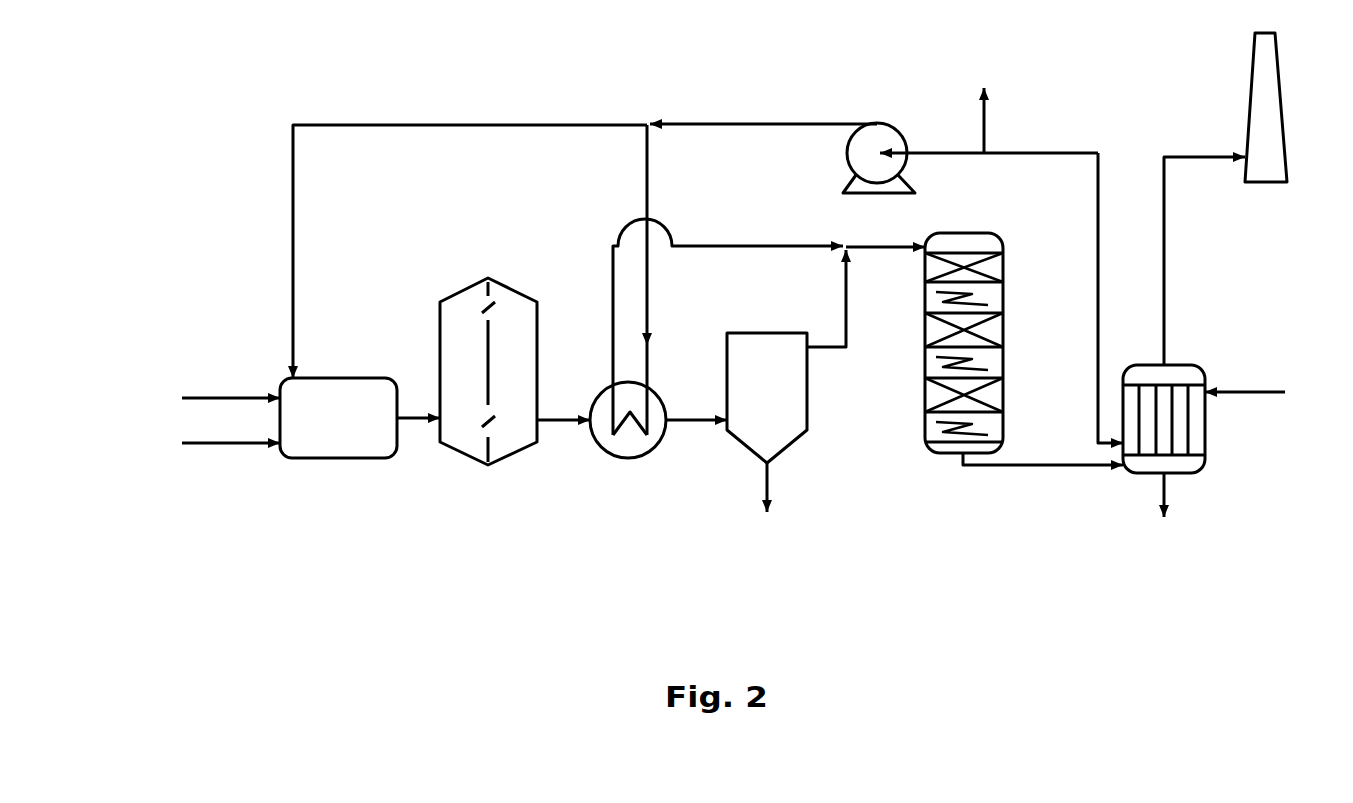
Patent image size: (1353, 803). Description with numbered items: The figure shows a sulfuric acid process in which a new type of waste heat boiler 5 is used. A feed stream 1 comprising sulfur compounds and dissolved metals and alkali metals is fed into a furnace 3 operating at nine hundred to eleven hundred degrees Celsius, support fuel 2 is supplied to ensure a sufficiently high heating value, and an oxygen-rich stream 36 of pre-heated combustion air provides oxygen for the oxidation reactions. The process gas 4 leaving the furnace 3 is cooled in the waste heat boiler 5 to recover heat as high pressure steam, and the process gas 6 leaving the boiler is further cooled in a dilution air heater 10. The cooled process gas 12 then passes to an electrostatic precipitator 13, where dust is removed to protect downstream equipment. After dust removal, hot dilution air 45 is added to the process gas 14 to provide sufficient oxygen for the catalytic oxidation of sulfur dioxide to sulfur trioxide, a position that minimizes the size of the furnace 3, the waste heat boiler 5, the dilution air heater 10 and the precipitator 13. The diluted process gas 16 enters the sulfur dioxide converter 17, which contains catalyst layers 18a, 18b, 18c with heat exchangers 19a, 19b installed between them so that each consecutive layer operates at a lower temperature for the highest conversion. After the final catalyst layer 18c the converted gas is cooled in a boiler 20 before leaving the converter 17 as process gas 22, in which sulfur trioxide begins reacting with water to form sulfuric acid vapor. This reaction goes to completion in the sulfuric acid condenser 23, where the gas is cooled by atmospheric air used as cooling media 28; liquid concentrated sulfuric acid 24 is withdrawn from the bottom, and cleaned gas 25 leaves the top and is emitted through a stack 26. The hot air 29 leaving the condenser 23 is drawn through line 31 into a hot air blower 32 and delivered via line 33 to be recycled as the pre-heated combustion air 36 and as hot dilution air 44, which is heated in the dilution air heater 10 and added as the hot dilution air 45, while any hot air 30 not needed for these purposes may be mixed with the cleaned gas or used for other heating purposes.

The feed stream 1 is at (231, 464).
The support fuel 2 is at (231, 381).
The furnace 3 is at (338, 418).
The process gas 4 is at (418, 446).
The waste heat boiler 5 is at (488, 390).
The process gas 6 is at (563, 448).
The dilution air heater 10 is at (628, 443).
The cooled effluent stream 12 is at (697, 446).
The electrostatic precipitator 13 is at (767, 422).
The process gas 14 is at (816, 298).
The diluted process gas 16 is at (885, 225).
The SO2 converter 17 is at (940, 361).
The catalyst layer 18a is at (993, 269).
The catalyst layer 18b is at (993, 330).
The final catalyst layer 18c is at (993, 395).
The heat exchanger 19a is at (999, 302).
The heat exchanger 19b is at (999, 365).
The boiler 20 is at (992, 433).
The process gas 22 is at (1043, 475).
The sulfuric acid condenser 23 is at (1173, 398).
The liquid concentrated H2SO4 24 is at (1186, 495).
The cleaned gas 25 is at (1204, 261).
The stack 26 is at (1243, 107).
The cooling media 28 is at (1245, 410).
The hot air 29 is at (1087, 278).
The hot air not used 30 is at (980, 102).
The compressor inlet stream 31 is at (989, 133).
The hot air blower 32 is at (879, 138).
The recycle stream 33 is at (763, 104).
The O2-rich stream 36 is at (470, 251).
The hot dilution air 44 is at (624, 280).
The hot dilution air 45 is at (728, 325).